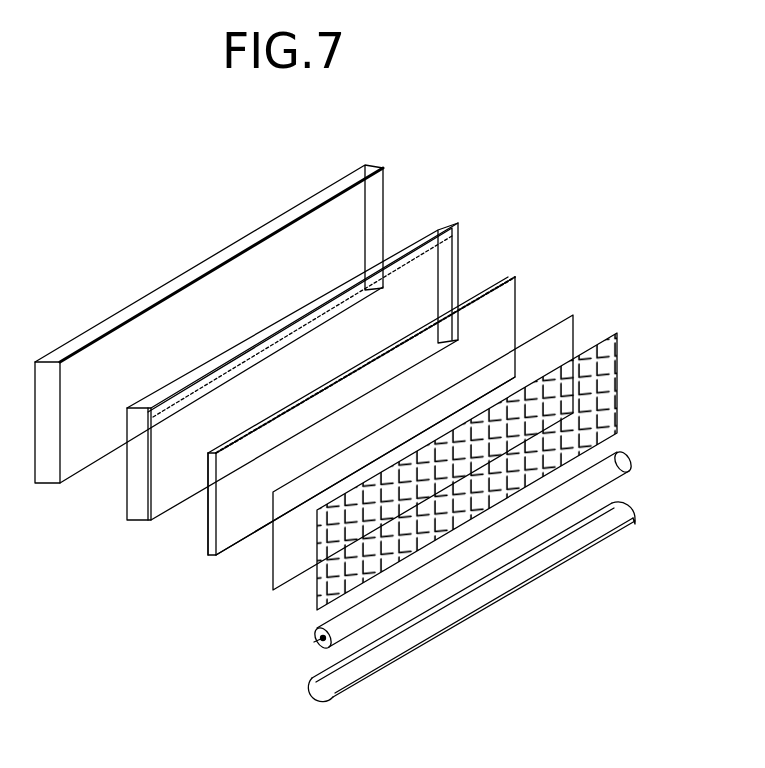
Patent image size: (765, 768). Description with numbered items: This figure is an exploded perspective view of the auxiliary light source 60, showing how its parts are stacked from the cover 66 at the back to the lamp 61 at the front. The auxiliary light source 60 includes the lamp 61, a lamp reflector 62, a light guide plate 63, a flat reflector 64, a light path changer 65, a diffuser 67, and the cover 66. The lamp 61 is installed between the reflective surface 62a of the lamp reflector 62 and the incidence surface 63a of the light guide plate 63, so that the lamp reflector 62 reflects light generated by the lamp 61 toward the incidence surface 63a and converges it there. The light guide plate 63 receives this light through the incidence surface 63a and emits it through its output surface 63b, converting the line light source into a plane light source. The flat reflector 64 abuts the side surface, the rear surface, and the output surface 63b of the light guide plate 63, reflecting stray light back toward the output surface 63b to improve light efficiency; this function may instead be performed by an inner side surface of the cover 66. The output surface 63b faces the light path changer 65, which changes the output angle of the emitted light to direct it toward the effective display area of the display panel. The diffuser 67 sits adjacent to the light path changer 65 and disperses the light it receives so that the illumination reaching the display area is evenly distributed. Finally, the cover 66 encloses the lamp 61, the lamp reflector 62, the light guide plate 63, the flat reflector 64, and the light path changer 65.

The auxiliary light source 60 is at (162, 203).
The lamp 61 is at (631, 464).
The lamp reflector 62 is at (489, 602).
The reflective surface 62a is at (580, 535).
The light guide plate 63 is at (380, 424).
The incidence surface 63a is at (208, 556).
The output surface 63b is at (507, 313).
The flat reflector 64 is at (455, 225).
The light path changer 65 is at (575, 325).
The cover 66 is at (378, 167).
The diffuser 67 is at (618, 352).